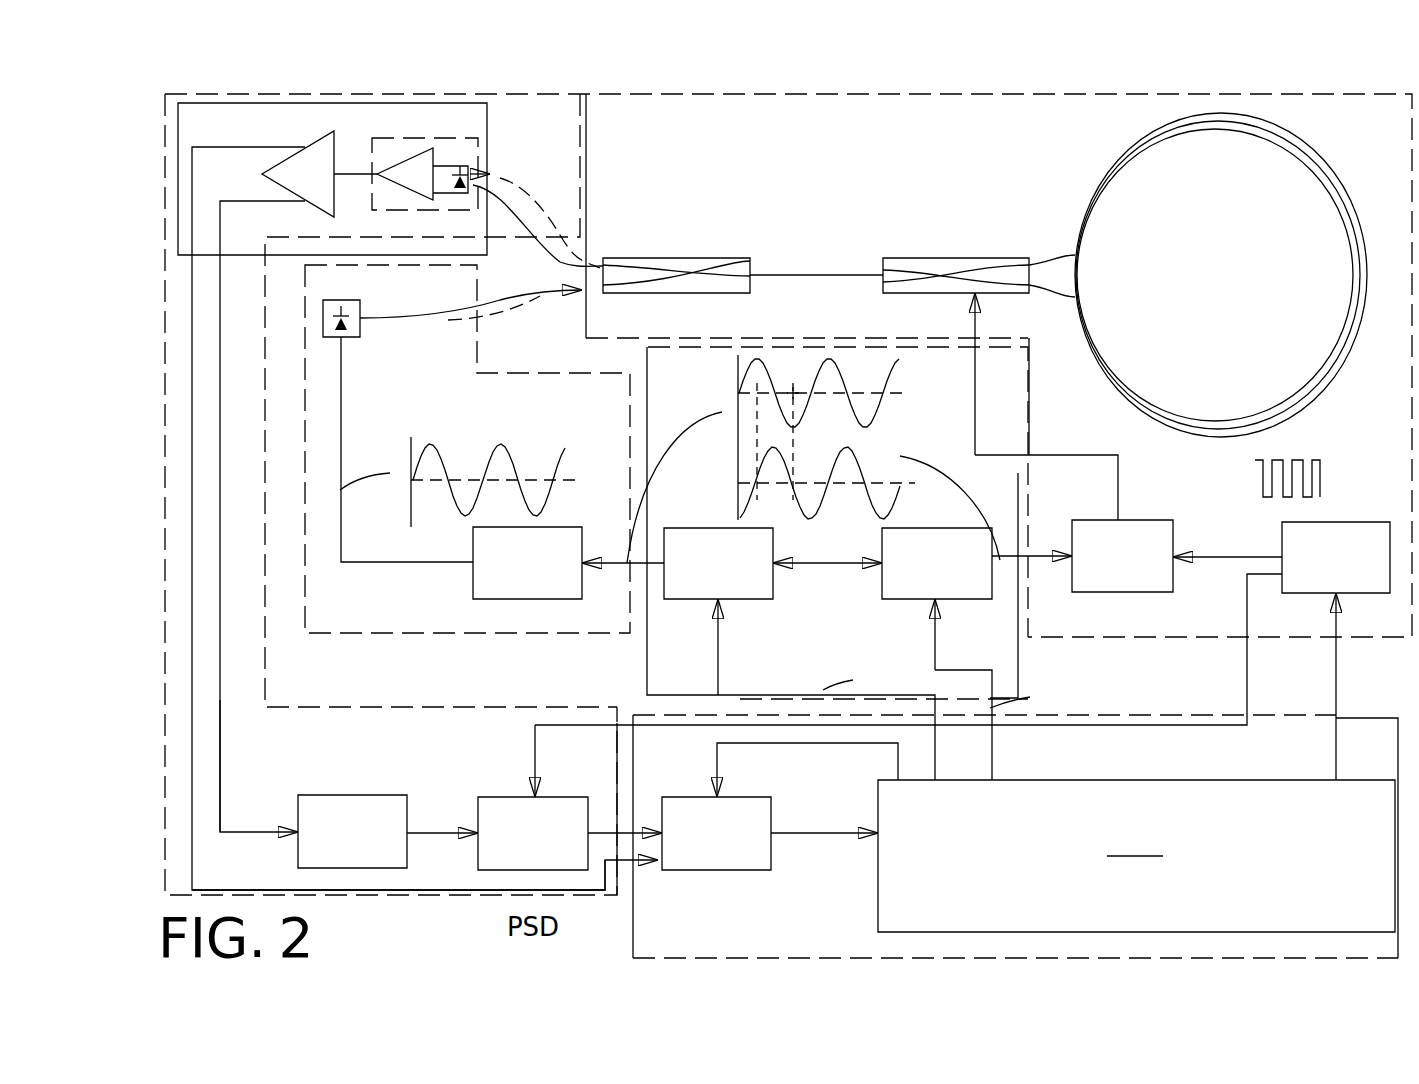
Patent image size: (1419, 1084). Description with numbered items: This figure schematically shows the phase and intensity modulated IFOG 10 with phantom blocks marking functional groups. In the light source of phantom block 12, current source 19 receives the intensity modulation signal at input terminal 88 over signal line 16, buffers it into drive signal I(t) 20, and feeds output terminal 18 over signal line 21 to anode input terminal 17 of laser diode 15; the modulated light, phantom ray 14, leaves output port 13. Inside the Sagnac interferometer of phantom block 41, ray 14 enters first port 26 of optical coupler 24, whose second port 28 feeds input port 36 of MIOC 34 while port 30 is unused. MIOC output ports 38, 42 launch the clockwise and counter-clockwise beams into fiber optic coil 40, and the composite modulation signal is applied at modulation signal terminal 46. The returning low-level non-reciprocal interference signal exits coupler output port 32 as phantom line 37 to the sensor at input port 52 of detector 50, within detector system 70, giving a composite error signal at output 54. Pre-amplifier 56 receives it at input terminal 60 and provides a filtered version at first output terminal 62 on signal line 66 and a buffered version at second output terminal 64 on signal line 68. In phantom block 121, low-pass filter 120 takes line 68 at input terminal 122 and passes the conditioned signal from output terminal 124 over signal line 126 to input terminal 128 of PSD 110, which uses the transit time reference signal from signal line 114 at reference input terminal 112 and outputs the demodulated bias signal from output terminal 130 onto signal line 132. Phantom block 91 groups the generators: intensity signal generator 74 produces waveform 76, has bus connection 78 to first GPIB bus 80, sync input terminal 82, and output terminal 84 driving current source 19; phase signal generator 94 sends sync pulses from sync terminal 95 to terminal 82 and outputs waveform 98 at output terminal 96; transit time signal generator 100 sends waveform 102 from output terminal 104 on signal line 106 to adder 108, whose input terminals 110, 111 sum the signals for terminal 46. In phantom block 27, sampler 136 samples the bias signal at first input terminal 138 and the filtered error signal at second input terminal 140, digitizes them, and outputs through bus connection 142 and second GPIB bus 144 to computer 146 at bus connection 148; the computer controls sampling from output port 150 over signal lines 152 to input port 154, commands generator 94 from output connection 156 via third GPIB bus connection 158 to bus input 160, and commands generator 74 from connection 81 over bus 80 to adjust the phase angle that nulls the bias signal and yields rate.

The phase and intensity modulated IFOG 10 is at (870, 160).
The light source phantom block 12 is at (565, 438).
The light source output port 13 is at (485, 302).
The modulated light signal ray 14 is at (537, 296).
The laser diode 15 is at (338, 302).
The signal line 16 is at (640, 562).
The laser diode input terminal 17 is at (343, 340).
The current source output terminal 18 is at (470, 567).
The current source 19 is at (527, 563).
The modulated intensity drive signal I(t) 20 is at (440, 443).
The signal line 21 is at (339, 562).
The optical coupler 24 is at (725, 257).
The coupler first port 26 is at (604, 295).
The sampler and computer phantom block 27 is at (1264, 764).
The coupler second port 28 is at (750, 278).
The coupler port 30 is at (768, 262).
The coupler output port 32 is at (597, 262).
The MIOC 34 is at (907, 258).
The MIOC input port 36 is at (883, 280).
The non-reciprocal interference signal ray 37 is at (520, 186).
The MIOC first output port 38 is at (1030, 268).
The fiber optic coil 40 is at (1216, 300).
The Sagnac interferometer phantom block 41 is at (642, 138).
The MIOC second output port 42 is at (1030, 293).
The modulation signal terminal 46 is at (973, 297).
The detector 50 is at (377, 140).
The detector input port 52 is at (512, 178).
The detector output 54 is at (372, 182).
The pre-amplifier 56 is at (298, 174).
The pre-amplifier input terminal 60 is at (336, 175).
The pre-amplifier first output terminal 62 is at (302, 147).
The pre-amplifier second output terminal 64 is at (305, 206).
The signal line 66 is at (295, 885).
The signal line 68 is at (218, 768).
The detector system 70 is at (488, 120).
The intensity signal generator 74 is at (773, 563).
The intensity modulation waveform 76 is at (893, 398).
The input bus connection 78 is at (713, 602).
The first GPIB digital bus 80 is at (738, 688).
The first computer bus connection 81 is at (936, 785).
The synchronization input terminal 82 is at (775, 570).
The intensity signal generator output terminal 84 is at (658, 568).
The current source input terminal 88 is at (597, 570).
The signal generator phantom block 91 is at (303, 676).
The phase signal generator 94 is at (937, 563).
The phase signal generator sync terminal 95 is at (877, 570).
The phase signal generator output terminal 96 is at (993, 565).
The phase modulation waveform 98 is at (850, 442).
The transit time signal generator 100 is at (1336, 651).
The transit time modulation waveform 102 is at (1258, 478).
The transit time signal generator output terminal 104 is at (1280, 550).
The signal line 106 is at (1243, 556).
The adder 108 is at (1122, 556).
The phase sensitive demodulator 110 is at (1175, 565).
The second adder input terminal 111 is at (1070, 565).
The PSD reference input terminal 112 is at (530, 792).
The signal line 114 is at (1120, 727).
The low-pass filter 120 is at (352, 831).
The PSD system phantom block 121 is at (357, 741).
The filter input terminal 122 is at (293, 830).
The filter output terminal 124 is at (410, 837).
The signal line 126 is at (430, 827).
The PSD demodulator input terminal 128 is at (470, 827).
The PSD output terminal 130 is at (598, 827).
The signal line 132 is at (620, 830).
The sampler 136 is at (716, 868).
The sampler first input terminal 138 is at (652, 830).
The sampler second input terminal 140 is at (665, 868).
The sampler output bus connection 142 is at (773, 838).
The second GPIB bus 144 is at (830, 838).
The computer 146 is at (1136, 856).
The second computer bus connection 148 is at (882, 838).
The computer output port 150 is at (900, 787).
The signal lines 152 is at (765, 745).
The sampler input port 154 is at (722, 795).
The computer output connection 156 is at (995, 775).
The third computer GPIB bus connection 158 is at (998, 670).
The phase signal generator bus input 160 is at (933, 601).